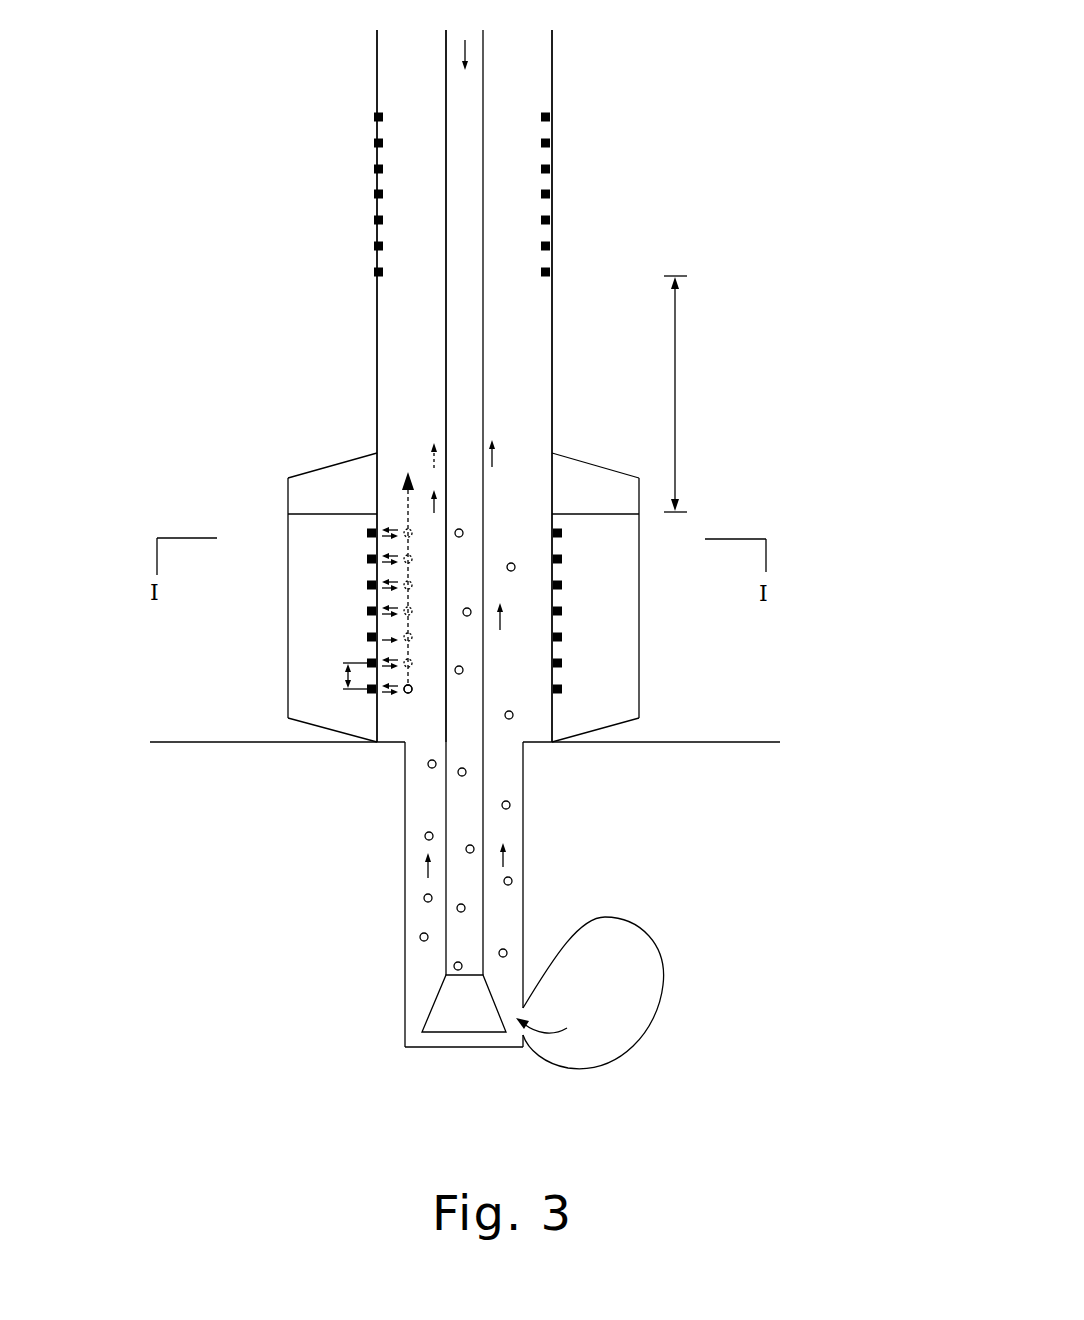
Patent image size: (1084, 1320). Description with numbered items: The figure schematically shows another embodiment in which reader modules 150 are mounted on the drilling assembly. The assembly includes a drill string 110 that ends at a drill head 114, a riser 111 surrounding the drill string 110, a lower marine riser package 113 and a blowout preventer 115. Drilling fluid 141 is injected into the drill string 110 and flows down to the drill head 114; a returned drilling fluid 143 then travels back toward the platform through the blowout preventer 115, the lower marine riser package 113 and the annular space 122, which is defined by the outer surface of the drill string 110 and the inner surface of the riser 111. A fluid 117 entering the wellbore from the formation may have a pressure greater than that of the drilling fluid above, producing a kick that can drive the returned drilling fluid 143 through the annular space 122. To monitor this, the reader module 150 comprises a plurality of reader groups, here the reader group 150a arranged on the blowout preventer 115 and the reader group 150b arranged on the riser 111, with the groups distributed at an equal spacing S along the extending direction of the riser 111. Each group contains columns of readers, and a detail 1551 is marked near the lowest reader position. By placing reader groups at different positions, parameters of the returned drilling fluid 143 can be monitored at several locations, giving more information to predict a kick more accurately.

The drill string 110 is at (420, 83).
The riser 111 is at (552, 360).
The lower marine riser package 113 is at (360, 465).
The drill head 114 is at (453, 1012).
The blowout preventer 115 is at (322, 710).
The fluid 117 is at (612, 990).
The annular space 122 is at (422, 396).
The drilling fluid 141 is at (465, 43).
The returned drilling fluid 143 is at (493, 465).
The reader module 150 is at (783, 194).
The reader group 150a is at (274, 528).
The reader group 150b is at (309, 112).
The sensor position 1551 is at (410, 695).
The spacing S is at (679, 394).